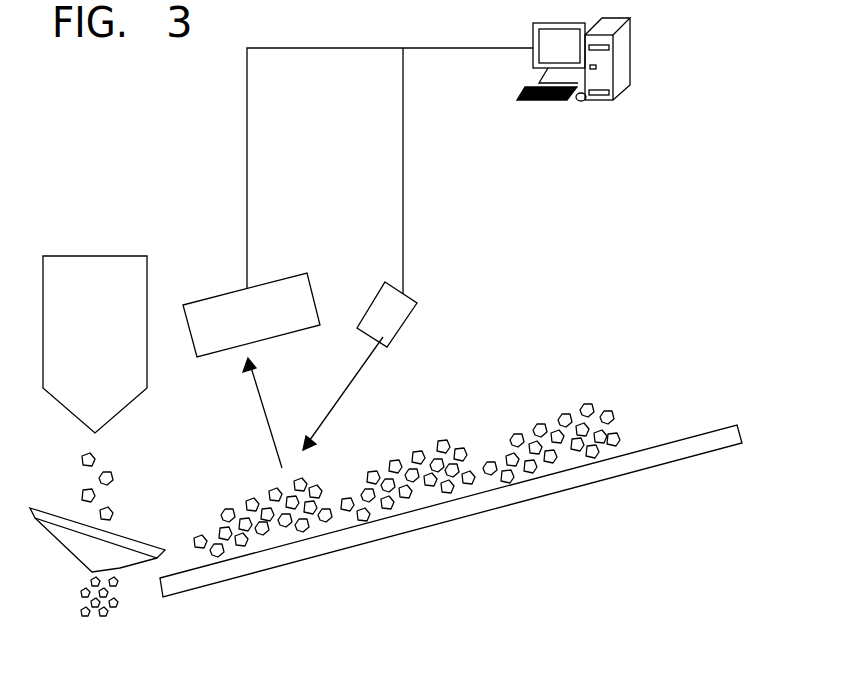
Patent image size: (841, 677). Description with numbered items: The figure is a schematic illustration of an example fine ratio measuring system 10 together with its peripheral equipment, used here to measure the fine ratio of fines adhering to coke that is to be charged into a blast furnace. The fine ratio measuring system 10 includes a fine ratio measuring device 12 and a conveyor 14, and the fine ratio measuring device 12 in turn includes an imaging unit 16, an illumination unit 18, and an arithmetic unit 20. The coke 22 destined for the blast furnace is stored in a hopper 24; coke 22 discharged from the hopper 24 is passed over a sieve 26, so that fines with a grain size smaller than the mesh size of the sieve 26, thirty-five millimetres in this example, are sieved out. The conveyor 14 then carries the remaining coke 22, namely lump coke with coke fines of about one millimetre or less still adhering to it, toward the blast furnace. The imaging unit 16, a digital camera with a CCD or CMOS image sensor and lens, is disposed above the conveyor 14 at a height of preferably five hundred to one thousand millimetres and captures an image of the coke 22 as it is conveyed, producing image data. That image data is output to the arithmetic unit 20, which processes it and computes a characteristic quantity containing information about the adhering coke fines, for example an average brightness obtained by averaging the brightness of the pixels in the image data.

The fine ratio measuring system 10 is at (615, 163).
The fine ratio measuring device 12 is at (562, 128).
The conveyor 14 is at (730, 423).
The imaging unit 16 is at (313, 286).
The illumination unit 18 is at (417, 303).
The arithmetic unit 20 is at (533, 103).
The coke 22 is at (607, 405).
The hopper 24 is at (92, 256).
The sieve 26 is at (47, 530).